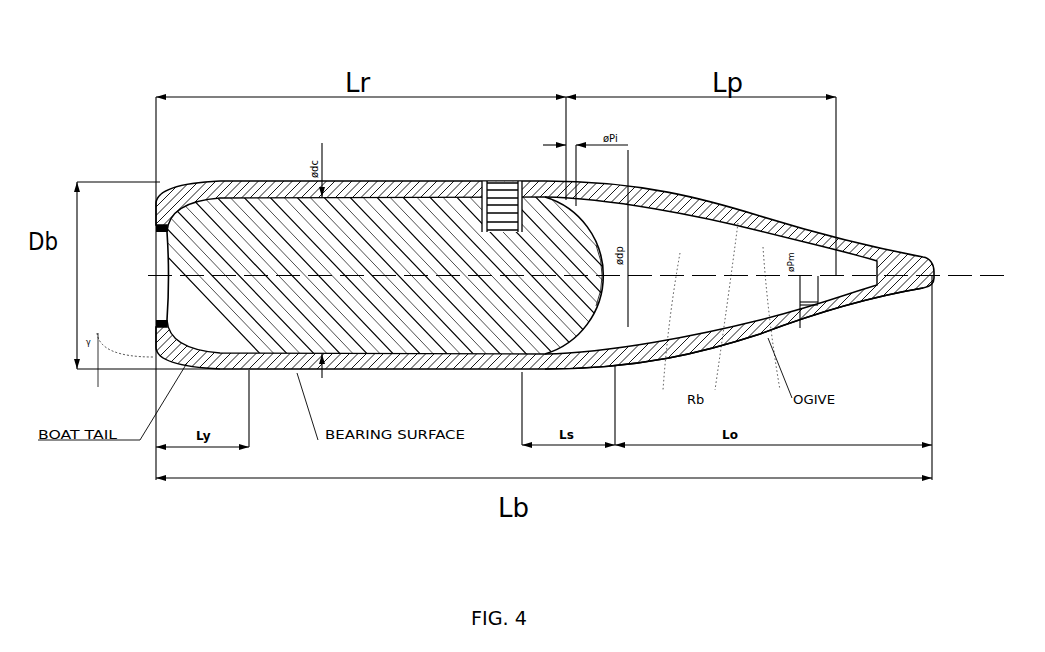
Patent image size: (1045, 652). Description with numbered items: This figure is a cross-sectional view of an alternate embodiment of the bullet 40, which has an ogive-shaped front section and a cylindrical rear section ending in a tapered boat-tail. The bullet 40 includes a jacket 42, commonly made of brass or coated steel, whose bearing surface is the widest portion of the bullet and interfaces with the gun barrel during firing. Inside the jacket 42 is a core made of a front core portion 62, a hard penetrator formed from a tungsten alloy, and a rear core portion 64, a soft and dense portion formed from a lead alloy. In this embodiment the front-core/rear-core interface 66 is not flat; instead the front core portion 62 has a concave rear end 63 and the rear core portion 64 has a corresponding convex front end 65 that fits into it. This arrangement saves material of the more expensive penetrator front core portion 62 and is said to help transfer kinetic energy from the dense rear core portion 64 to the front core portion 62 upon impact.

The bullet 40 is at (522, 288).
The jacket 42 is at (257, 183).
The front core portion 62 is at (705, 245).
The concave rear end 63 is at (603, 283).
The rear core portion 64 is at (393, 225).
The convex front end 65 is at (583, 250).
The front-core/rear-core interface 66 is at (597, 332).